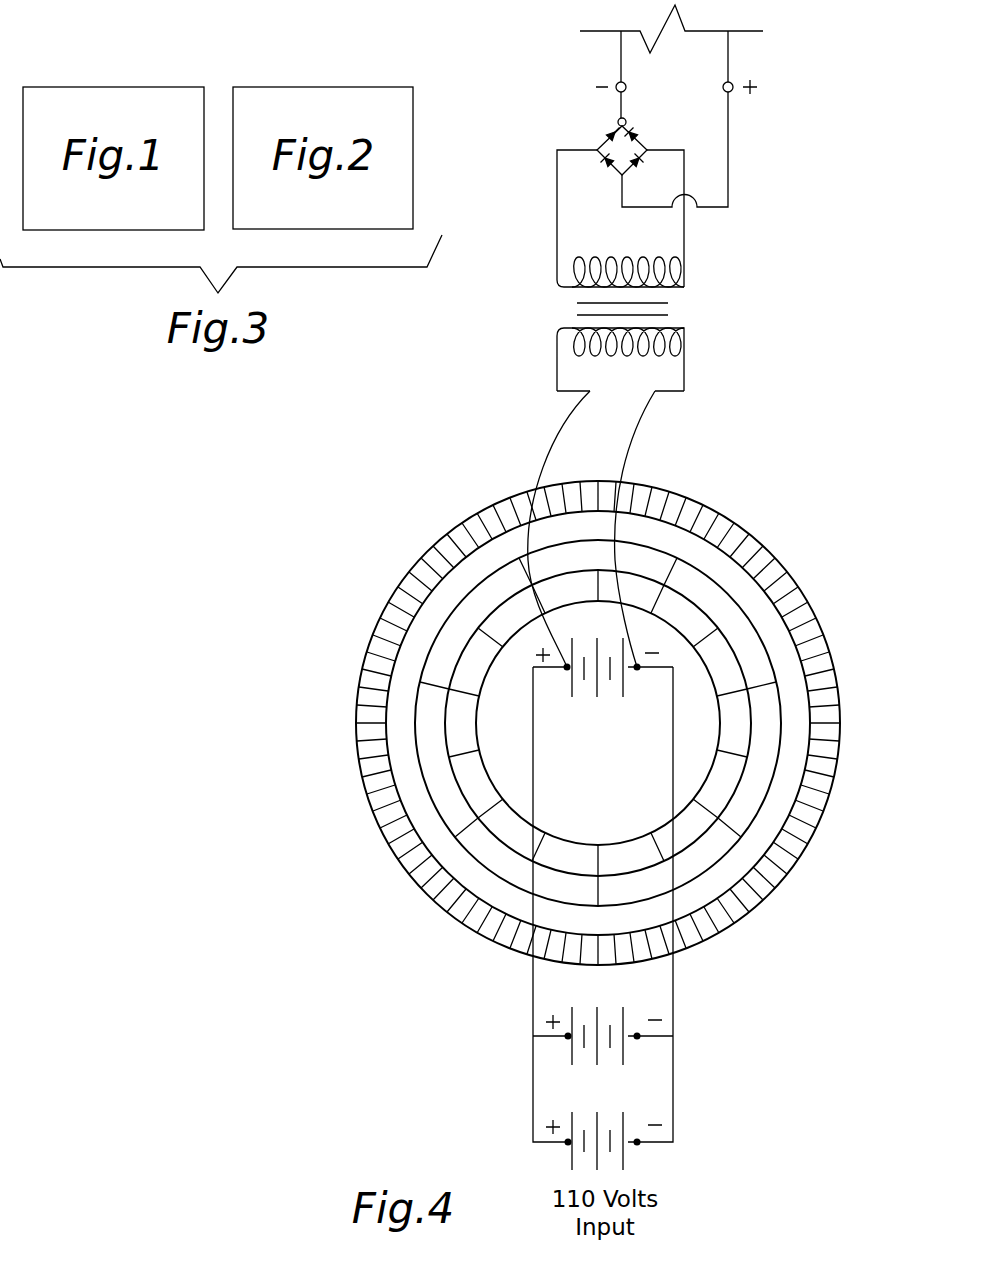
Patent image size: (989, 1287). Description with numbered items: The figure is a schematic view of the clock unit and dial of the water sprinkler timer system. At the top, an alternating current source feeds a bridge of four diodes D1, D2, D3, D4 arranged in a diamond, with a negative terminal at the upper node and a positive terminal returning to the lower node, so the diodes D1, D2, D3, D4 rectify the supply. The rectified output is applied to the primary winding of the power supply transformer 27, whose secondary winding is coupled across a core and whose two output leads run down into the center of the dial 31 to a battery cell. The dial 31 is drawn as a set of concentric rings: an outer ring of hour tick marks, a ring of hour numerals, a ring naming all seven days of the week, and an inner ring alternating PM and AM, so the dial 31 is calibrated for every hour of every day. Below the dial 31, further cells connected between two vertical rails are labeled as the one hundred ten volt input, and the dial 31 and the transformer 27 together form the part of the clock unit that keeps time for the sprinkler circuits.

The power supply transformer 27 is at (708, 302).
The dial 31 is at (802, 593).
The diode D1 is at (594, 176).
The diode D2 is at (595, 129).
The diode D3 is at (653, 174).
The diode D4 is at (650, 129).